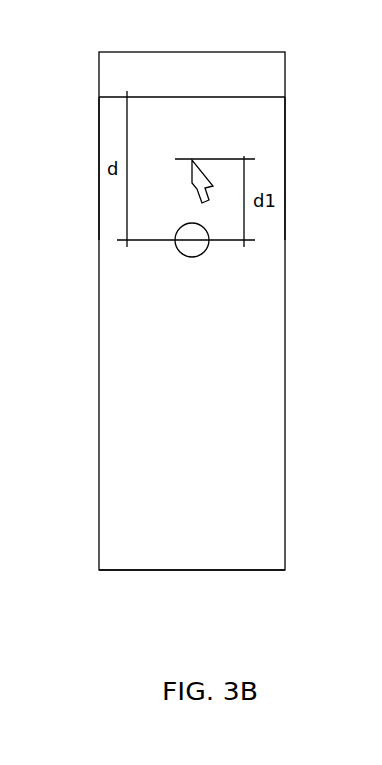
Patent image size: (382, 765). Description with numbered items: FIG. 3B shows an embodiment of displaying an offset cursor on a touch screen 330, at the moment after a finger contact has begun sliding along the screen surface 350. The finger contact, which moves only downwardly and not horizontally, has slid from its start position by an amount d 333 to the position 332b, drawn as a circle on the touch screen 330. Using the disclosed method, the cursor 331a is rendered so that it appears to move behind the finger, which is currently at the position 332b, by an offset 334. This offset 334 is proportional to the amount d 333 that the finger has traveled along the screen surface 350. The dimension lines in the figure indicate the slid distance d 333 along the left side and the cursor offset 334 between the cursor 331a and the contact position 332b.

The touch screen 330 is at (102, 330).
The cursor 331a is at (192, 160).
The position 332b is at (208, 247).
The amount d 333 is at (102, 154).
The offset d1 334 is at (277, 182).
The screen surface 350 is at (255, 457).